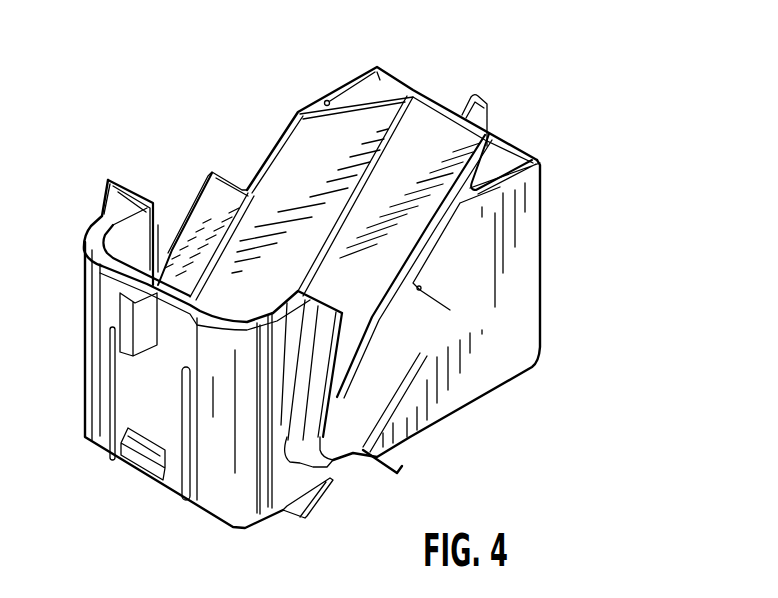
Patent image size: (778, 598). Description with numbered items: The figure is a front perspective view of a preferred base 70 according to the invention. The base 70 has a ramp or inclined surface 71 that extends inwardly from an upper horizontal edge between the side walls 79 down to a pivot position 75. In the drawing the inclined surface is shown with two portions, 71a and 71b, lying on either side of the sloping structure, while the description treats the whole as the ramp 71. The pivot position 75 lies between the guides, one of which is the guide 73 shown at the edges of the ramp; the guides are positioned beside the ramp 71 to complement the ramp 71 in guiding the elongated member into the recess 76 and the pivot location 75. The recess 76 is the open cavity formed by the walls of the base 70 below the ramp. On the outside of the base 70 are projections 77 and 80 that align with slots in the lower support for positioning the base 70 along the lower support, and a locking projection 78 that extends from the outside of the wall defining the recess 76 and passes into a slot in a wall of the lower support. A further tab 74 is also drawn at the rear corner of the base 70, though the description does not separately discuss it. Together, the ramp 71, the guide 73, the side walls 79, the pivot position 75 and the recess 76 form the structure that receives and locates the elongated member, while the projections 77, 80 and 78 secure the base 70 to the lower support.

The base 70 is at (624, 130).
The ramp or inclined surface 71 is at (432, 130).
The first slot 71a is at (310, 156).
The second slot 71b is at (513, 159).
The guide 73 is at (213, 190).
The tab 74 is at (164, 181).
The pivot position 75 is at (423, 433).
The recess 76 is at (158, 407).
The projection 77 is at (133, 325).
The locking projection 78 is at (140, 462).
The side wall 79 is at (478, 275).
The projection 80 is at (482, 110).